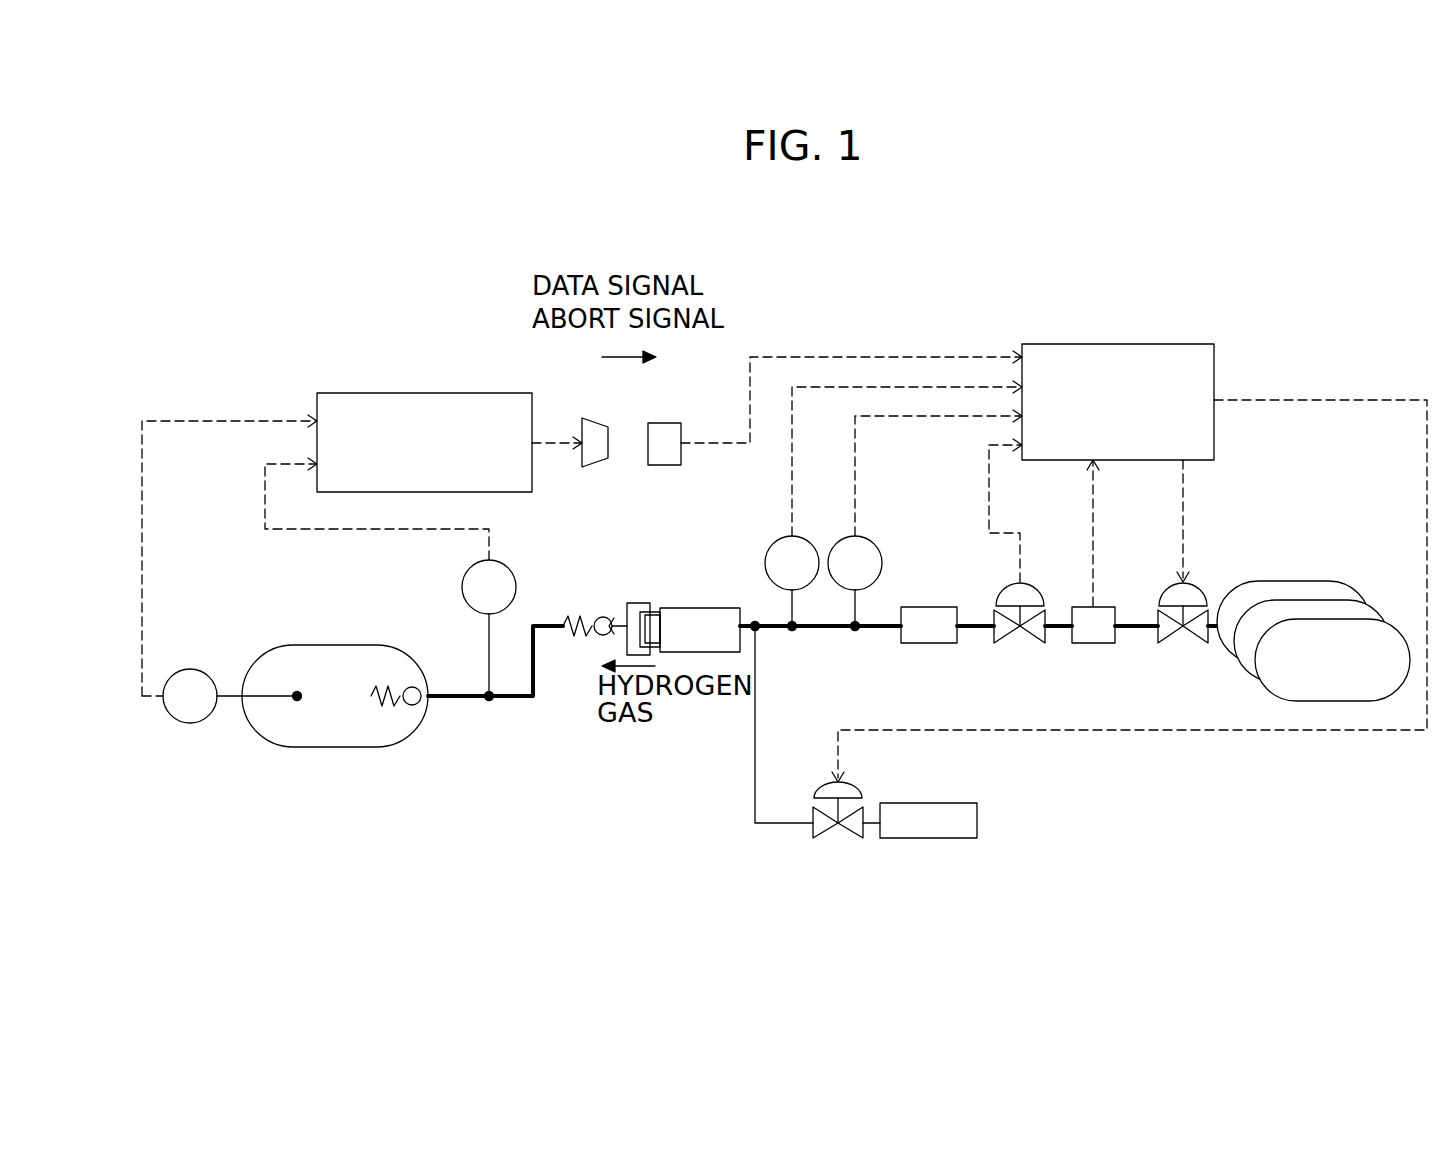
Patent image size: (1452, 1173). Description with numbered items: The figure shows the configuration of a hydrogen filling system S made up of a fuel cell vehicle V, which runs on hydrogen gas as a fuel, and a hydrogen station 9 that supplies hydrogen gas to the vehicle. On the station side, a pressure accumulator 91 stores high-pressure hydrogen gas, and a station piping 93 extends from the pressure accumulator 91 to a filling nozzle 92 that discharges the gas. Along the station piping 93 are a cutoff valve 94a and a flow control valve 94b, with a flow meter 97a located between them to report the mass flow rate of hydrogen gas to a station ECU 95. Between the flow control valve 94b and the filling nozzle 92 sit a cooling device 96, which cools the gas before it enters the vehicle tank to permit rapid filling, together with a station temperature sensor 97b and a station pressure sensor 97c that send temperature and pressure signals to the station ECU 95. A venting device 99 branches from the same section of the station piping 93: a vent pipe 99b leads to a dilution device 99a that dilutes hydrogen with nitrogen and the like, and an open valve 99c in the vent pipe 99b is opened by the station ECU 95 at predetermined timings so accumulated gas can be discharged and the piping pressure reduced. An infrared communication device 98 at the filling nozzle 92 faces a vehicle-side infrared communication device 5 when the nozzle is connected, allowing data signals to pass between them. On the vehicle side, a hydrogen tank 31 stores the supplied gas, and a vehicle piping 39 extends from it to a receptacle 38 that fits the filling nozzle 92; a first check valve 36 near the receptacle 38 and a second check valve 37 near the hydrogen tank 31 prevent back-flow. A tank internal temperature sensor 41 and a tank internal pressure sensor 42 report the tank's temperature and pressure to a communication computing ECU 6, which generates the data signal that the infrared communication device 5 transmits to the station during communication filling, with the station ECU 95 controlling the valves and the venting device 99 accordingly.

The hydrogen filling system S is at (349, 219).
The fuel cell vehicle V is at (466, 302).
The hydrogen station 9 is at (882, 302).
The communication computing ECU 6 is at (443, 392).
The infrared communication device 5 is at (594, 420).
The infrared communication device 98 is at (663, 423).
The station ECU 95 is at (1128, 344).
The tank internal temperature sensor 41 is at (192, 669).
The hydrogen tank 31 is at (378, 645).
The second check valve 37 is at (421, 686).
The tank internal pressure sensor 42 is at (502, 563).
The vehicle piping 39 is at (533, 700).
The first check valve 36 is at (591, 616).
The receptacle 38 is at (638, 603).
The filling nozzle 92 is at (702, 608).
The station piping 93 is at (829, 631).
The station pressure sensor 97c is at (796, 537).
The station temperature sensor 97b is at (861, 537).
The cooling device 96 is at (930, 607).
The flow control valve 94b is at (1031, 590).
The flow meter 97a is at (1100, 607).
The cutoff valve 94a is at (1196, 590).
The pressure accumulator 91 is at (1320, 581).
The venting device 99 is at (860, 770).
The vent pipe 99b is at (783, 803).
The open valve 99c is at (856, 781).
The dilution device 99a is at (922, 803).